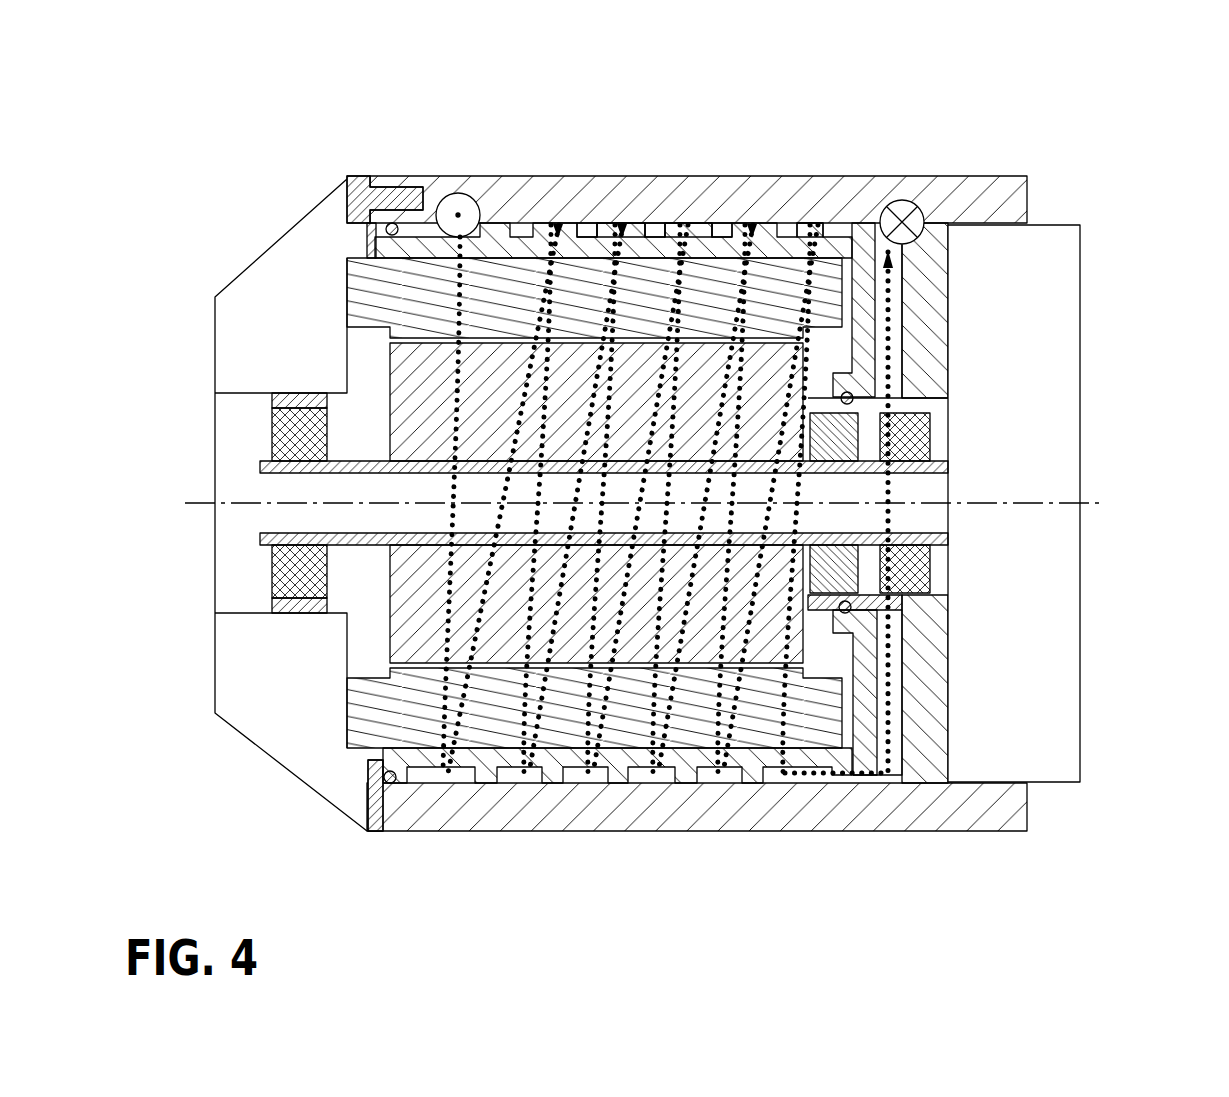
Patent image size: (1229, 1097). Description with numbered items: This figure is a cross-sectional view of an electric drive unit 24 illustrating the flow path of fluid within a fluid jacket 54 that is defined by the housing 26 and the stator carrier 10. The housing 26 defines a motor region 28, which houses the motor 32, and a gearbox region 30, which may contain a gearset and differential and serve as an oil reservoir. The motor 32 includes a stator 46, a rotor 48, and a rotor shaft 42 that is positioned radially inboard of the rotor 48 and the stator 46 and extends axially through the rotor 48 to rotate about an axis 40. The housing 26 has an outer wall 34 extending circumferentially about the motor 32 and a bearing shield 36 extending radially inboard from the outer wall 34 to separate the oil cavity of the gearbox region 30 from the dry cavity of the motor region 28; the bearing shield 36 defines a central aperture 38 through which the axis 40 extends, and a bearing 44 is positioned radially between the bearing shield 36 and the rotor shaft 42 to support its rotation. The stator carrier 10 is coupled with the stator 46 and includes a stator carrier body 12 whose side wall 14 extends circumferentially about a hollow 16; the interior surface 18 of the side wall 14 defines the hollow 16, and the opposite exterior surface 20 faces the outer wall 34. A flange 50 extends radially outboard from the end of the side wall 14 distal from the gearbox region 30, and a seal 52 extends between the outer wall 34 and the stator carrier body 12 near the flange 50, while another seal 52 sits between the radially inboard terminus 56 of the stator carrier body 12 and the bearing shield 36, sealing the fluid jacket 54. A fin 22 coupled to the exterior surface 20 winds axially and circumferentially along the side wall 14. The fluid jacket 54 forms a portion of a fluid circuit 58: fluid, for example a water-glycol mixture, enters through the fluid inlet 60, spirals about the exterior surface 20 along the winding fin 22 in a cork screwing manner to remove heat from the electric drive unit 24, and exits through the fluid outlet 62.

The stator carrier 10 is at (607, 230).
The stator carrier body 12 is at (738, 235).
The side wall 14 is at (823, 235).
The hollow 16 is at (393, 272).
The interior surface 18 is at (697, 235).
The exterior surface 20 is at (633, 235).
The fin 22 is at (550, 777).
The electric drive unit 24 is at (908, 145).
The housing 26 is at (858, 192).
The motor region 28 is at (470, 390).
The gearbox region 30 is at (1048, 455).
The motor 32 is at (413, 405).
The outer wall 34 is at (632, 215).
The bearing shield 36 is at (863, 310).
The central aperture 38 is at (867, 582).
The axis 40 is at (1108, 500).
The rotor shaft 42 is at (933, 565).
The bearing 44 is at (933, 455).
The stator 46 is at (552, 260).
The rotor 48 is at (437, 437).
The flange 50 is at (333, 188).
The seal 52 is at (388, 190).
The fluid jacket 54 is at (680, 217).
The radially inboard terminus 56 is at (870, 400).
The fluid circuit 58 is at (483, 275).
The fluid inlet 60 is at (440, 197).
The fluid outlet 62 is at (915, 228).